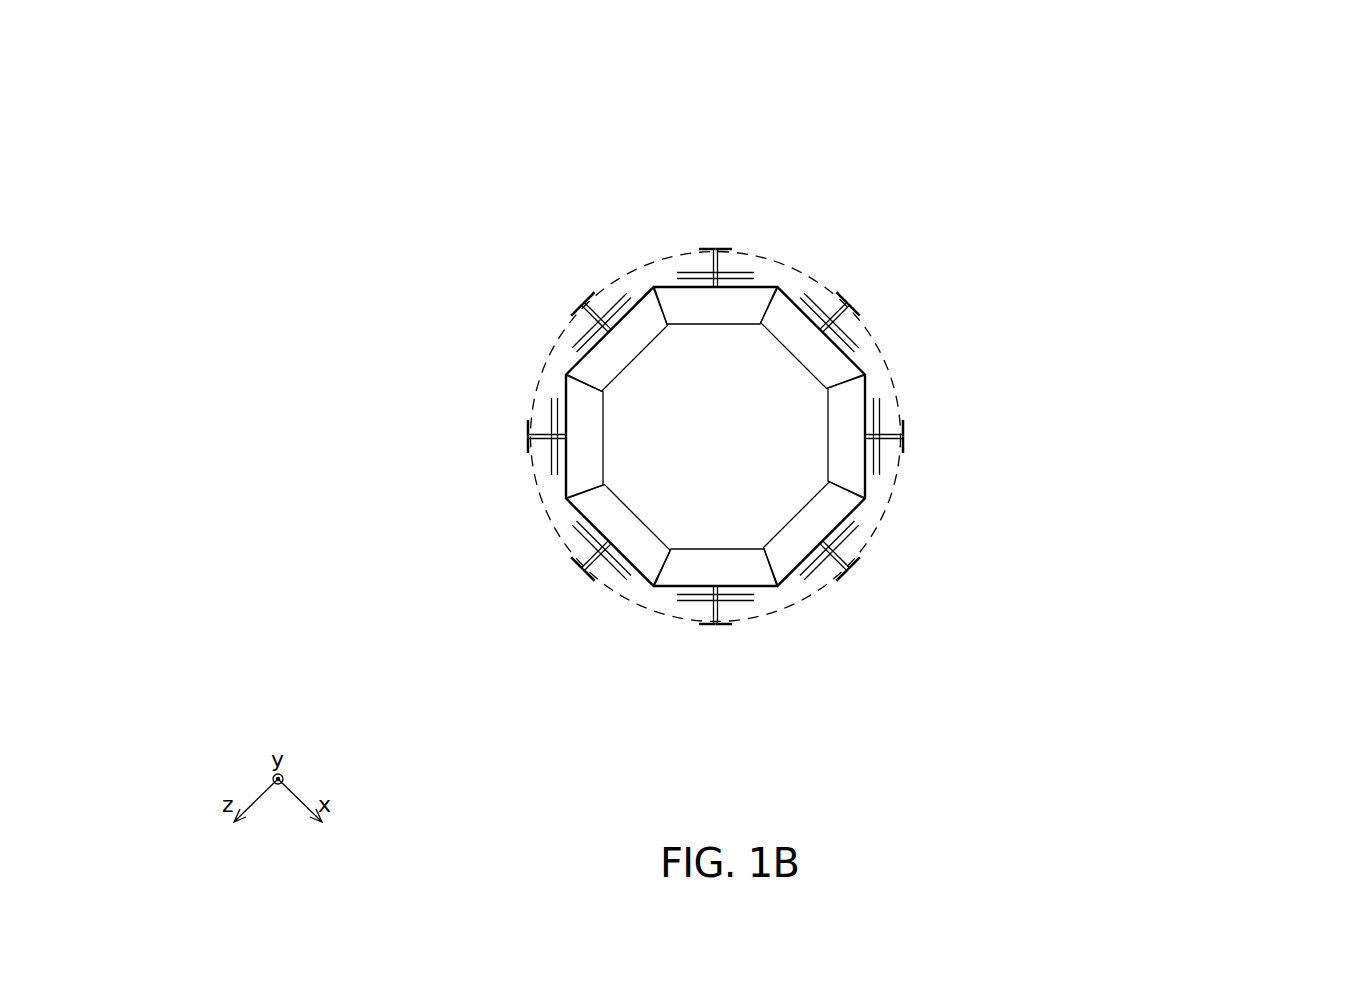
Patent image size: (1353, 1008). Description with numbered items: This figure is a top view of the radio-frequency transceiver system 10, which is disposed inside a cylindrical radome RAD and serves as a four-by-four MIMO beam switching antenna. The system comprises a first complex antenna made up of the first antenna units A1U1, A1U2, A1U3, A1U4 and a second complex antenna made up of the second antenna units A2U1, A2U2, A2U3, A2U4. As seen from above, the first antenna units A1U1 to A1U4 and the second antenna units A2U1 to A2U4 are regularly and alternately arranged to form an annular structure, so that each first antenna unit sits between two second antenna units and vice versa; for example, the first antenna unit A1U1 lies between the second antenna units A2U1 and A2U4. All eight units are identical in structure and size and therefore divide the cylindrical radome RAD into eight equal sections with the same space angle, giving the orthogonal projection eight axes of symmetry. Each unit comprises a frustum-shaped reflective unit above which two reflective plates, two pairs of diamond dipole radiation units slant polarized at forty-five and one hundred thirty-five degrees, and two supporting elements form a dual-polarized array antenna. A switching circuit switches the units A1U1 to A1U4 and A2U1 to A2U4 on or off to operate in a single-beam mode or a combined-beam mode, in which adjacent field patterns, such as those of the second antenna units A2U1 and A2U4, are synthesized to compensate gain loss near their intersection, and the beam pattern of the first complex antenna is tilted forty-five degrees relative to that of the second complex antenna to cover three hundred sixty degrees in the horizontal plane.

The radio-frequency transceiver system 10 is at (1160, 130).
The cylindrical radome RAD is at (806, 268).
The first antenna unit A1U1 is at (537, 828).
The first antenna unit A1U2 is at (227, 515).
The first antenna unit A1U3 is at (559, 212).
The first antenna unit A1U4 is at (1236, 515).
The second antenna unit A2U1 is at (227, 700).
The second antenna unit A2U2 is at (227, 330).
The second antenna unit A2U3 is at (1236, 332).
The second antenna unit A2U4 is at (1171, 700).